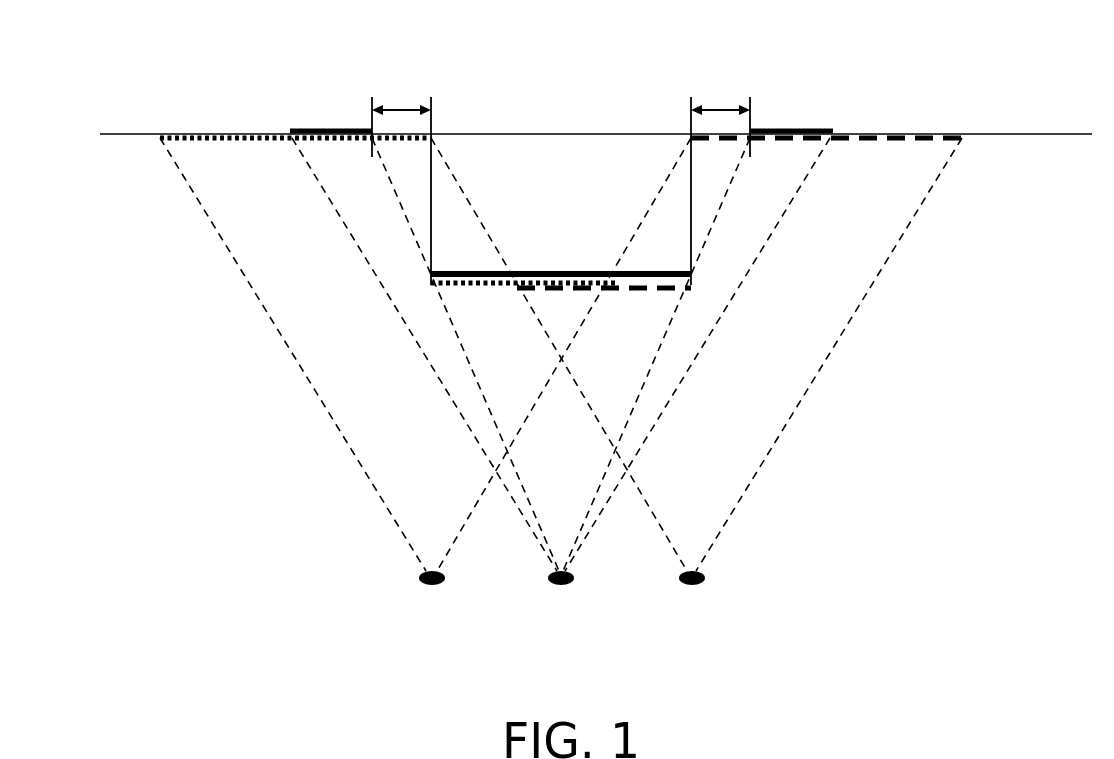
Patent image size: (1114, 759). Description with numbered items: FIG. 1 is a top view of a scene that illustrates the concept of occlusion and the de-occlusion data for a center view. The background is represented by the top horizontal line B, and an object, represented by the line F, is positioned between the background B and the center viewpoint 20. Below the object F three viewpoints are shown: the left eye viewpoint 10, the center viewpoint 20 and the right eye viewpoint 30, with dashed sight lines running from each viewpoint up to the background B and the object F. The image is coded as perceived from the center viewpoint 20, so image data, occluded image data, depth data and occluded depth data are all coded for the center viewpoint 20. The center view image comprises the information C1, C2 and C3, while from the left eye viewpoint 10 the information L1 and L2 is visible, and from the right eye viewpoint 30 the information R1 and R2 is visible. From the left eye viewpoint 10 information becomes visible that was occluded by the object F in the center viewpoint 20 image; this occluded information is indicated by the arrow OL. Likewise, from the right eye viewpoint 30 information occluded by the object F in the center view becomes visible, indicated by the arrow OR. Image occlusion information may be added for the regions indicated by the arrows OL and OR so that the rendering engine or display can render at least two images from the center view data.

The left eye viewpoint 10 is at (432, 585).
The center viewpoint 20 is at (561, 585).
The right eye viewpoint 30 is at (692, 585).
The background B is at (1076, 134).
The object F is at (588, 270).
The left eye viewpoint information L1 is at (208, 134).
The center view image information C1 is at (322, 130).
The arrow indicating left occluded information OL is at (398, 105).
The arrow indicating right occluded information OR is at (721, 105).
The center view image information C3 is at (797, 130).
The right eye viewpoint information R2 is at (913, 134).
The center view image information C2 is at (531, 270).
The left eye viewpoint information L2 is at (430, 283).
The right eye viewpoint information R1 is at (691, 287).